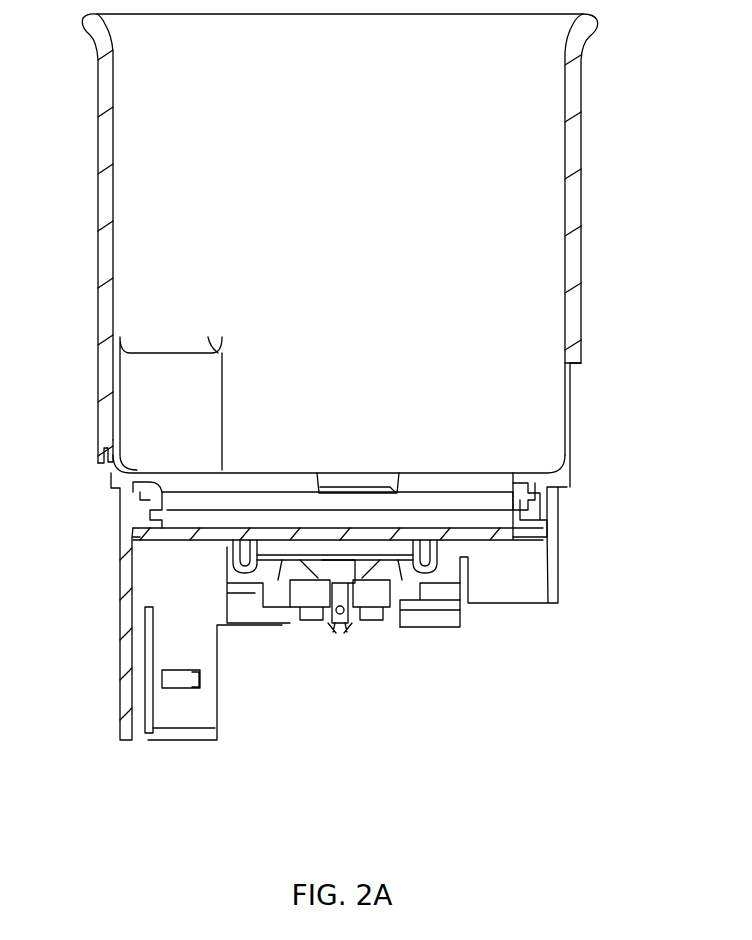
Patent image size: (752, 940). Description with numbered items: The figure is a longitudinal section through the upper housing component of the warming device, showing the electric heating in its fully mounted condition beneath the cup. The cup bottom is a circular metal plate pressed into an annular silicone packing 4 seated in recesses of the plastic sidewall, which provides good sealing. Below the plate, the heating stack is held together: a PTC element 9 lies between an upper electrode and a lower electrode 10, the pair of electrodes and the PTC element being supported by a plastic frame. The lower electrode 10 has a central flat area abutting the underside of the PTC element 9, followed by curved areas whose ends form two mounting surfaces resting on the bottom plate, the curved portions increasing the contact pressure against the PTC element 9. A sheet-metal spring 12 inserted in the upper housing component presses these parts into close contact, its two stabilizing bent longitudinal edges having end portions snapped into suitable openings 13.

The silicone packing 4 is at (503, 518).
The PTC element 9 is at (230, 550).
The lower electrode 10 is at (277, 603).
The sheet-metal spring 12 is at (378, 603).
The openings 13 is at (435, 600).